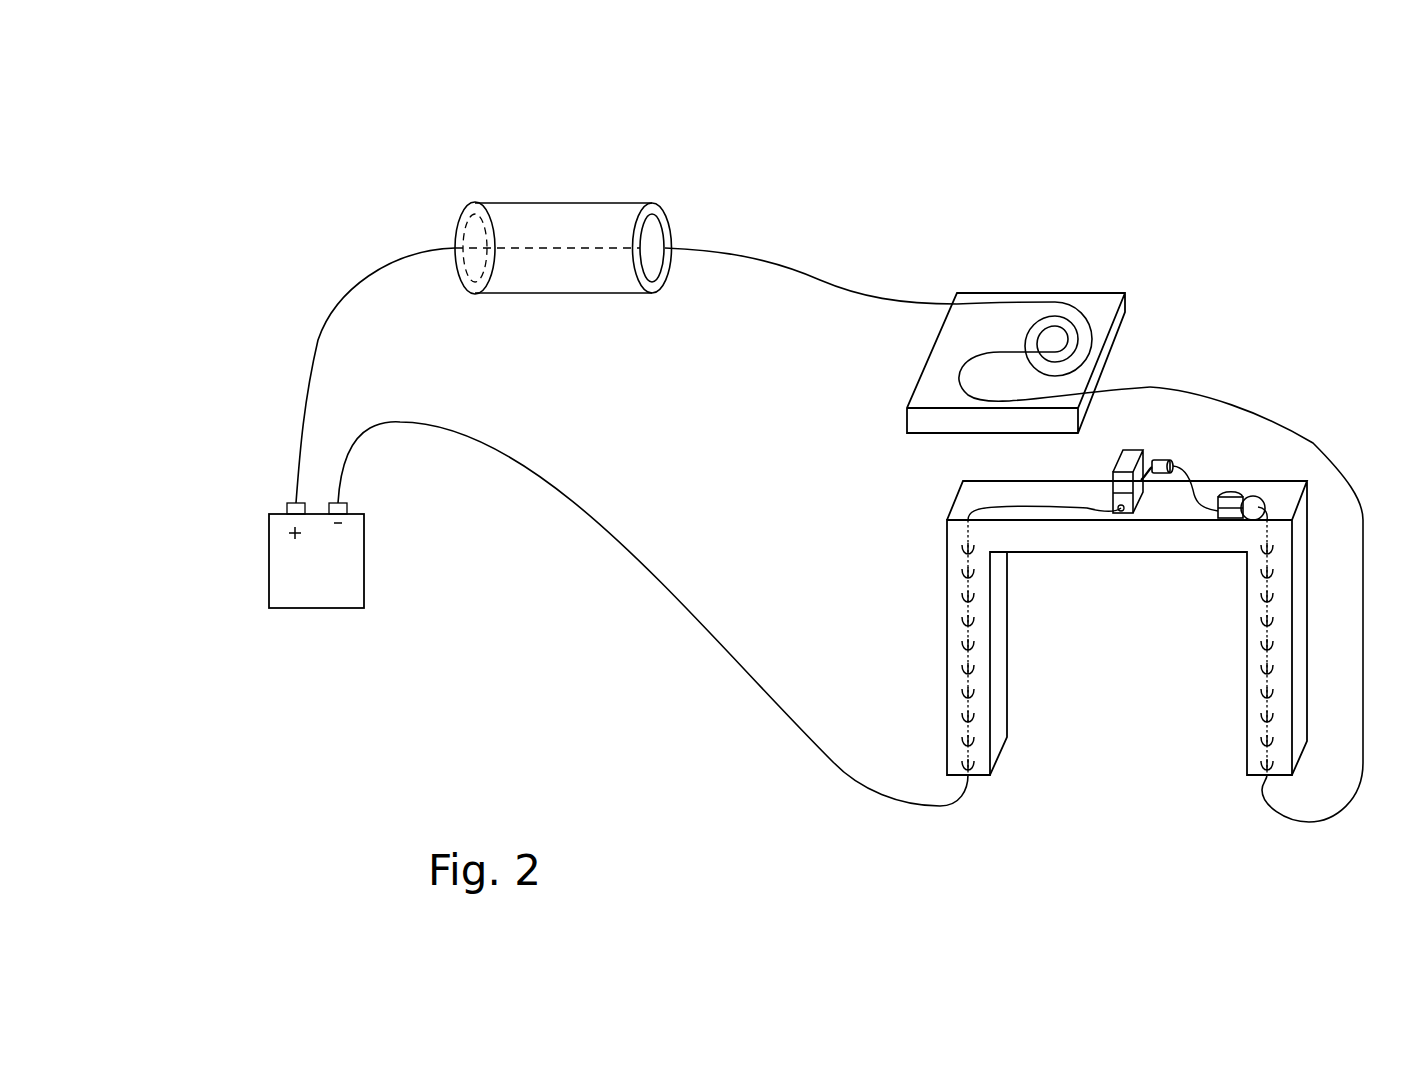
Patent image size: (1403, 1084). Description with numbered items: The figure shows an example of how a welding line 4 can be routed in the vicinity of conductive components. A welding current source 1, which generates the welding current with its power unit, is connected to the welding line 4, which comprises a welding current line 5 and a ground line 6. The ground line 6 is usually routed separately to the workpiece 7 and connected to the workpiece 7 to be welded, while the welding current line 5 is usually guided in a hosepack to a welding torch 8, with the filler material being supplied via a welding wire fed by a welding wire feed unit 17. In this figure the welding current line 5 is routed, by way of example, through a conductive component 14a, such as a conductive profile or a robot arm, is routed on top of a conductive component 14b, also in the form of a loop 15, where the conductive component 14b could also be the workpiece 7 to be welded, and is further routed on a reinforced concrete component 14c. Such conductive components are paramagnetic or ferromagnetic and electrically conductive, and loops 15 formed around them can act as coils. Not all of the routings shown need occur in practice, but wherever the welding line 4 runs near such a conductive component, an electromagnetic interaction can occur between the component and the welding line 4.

The welding current source 1 is at (301, 610).
The welding line 4 is at (302, 387).
The welding current line 5 is at (357, 297).
The ground line 6 is at (688, 608).
The workpiece 7 is at (1132, 453).
The welding torch 8 is at (1178, 453).
The conductive component 14a is at (602, 203).
The conductive component 14b is at (977, 292).
The reinforced concrete component 14c is at (1000, 757).
The loop 15 is at (1028, 300).
The welding wire feed unit 17 is at (1233, 502).